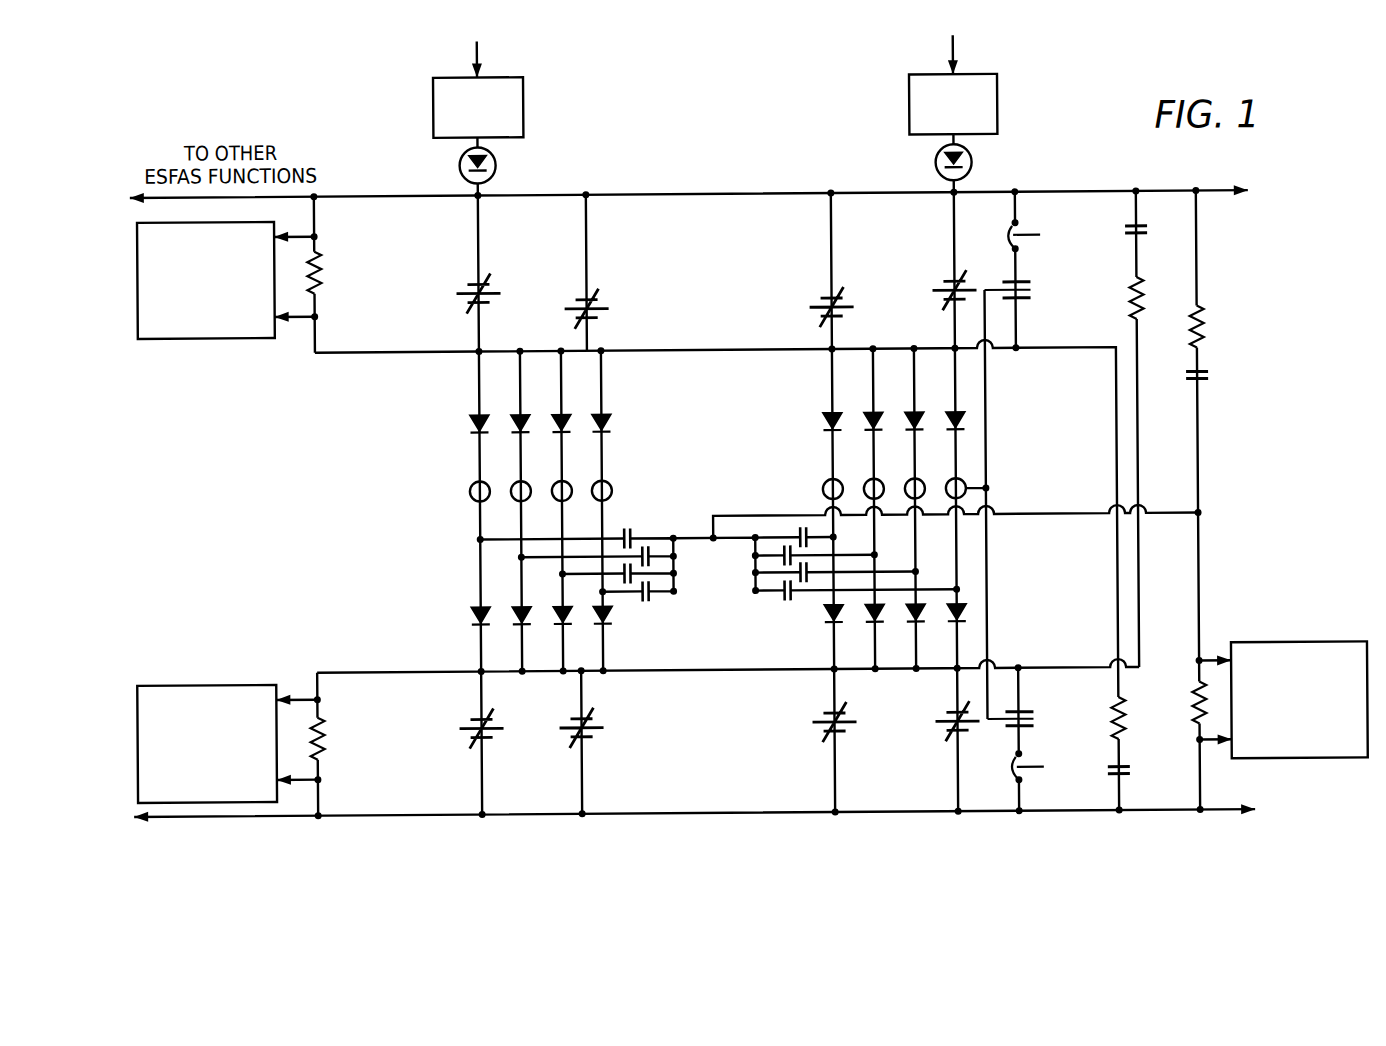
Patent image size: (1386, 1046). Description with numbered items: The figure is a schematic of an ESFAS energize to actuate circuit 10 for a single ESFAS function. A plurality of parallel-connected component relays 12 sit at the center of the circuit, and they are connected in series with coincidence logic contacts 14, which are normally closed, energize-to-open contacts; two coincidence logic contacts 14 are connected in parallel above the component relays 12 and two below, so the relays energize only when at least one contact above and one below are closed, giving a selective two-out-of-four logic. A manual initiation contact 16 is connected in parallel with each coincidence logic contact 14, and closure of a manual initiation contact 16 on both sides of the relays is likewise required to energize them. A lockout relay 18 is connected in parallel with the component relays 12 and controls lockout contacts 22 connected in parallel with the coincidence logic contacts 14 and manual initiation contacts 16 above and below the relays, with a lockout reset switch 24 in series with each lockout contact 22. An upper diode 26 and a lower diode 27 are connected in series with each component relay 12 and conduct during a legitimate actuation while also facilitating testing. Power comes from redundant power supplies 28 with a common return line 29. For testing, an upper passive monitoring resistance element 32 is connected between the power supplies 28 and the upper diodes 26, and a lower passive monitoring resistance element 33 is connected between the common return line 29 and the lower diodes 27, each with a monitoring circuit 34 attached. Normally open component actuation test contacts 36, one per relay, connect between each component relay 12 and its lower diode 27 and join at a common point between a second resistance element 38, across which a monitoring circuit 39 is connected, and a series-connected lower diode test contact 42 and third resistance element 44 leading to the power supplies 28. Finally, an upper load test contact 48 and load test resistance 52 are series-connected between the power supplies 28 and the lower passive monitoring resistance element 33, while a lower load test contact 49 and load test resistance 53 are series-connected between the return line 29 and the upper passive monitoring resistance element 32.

The energize to actuate circuit 10 is at (668, 113).
The component relays 12 is at (514, 481).
The coincidence logic contacts 14 is at (612, 306).
The manual initiation contact 16 is at (492, 283).
The lockout relay 18 is at (966, 485).
The lockout contacts 22 is at (1034, 292).
The lockout reset switch 24 is at (1008, 240).
The upper diode 26 is at (515, 412).
The lower diode 27 is at (486, 616).
The power supplies 28 is at (526, 120).
The common return line 29 is at (478, 47).
The upper passive monitoring resistance element 32 is at (323, 265).
The lower passive monitoring resistance element 33 is at (320, 738).
The monitoring circuit 34 is at (206, 336).
The component actuation test contacts 36 is at (622, 603).
The second resistance element 38 is at (1192, 696).
The monitoring circuit 39 is at (1286, 646).
The lower diode test contact 42 is at (1210, 378).
The third resistance element 44 is at (1207, 322).
The upper load test contact 48 is at (1149, 231).
The lower load test contact 49 is at (1128, 776).
The load test resistance 52 is at (1146, 290).
The load test resistance 53 is at (1125, 728).